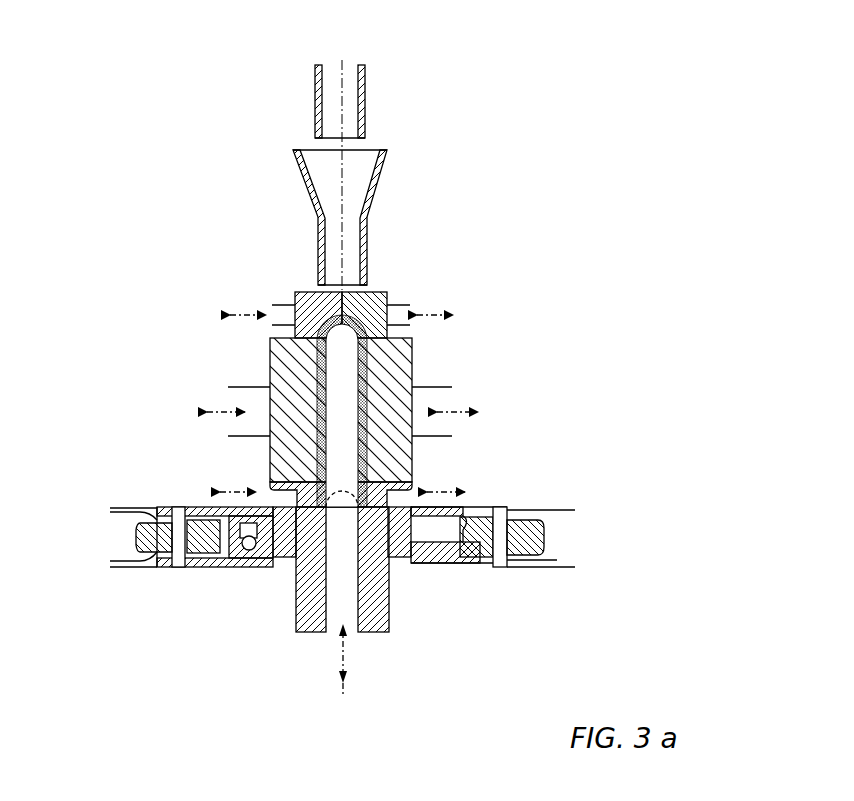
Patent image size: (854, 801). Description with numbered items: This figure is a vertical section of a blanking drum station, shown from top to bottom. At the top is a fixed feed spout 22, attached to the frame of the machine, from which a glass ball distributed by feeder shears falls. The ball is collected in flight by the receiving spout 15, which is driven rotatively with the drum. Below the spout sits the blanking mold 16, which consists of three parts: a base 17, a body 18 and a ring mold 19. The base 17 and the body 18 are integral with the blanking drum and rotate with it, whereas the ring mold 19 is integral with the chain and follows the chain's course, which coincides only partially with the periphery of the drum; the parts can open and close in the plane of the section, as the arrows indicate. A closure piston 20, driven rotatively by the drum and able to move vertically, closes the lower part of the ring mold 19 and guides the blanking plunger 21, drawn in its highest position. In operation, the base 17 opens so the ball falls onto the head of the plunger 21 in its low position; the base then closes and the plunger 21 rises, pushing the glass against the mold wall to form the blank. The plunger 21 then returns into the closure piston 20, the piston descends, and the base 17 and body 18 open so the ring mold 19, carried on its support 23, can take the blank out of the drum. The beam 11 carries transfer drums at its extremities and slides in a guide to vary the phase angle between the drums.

The beam 11 is at (490, 507).
The spout 15 is at (370, 205).
The blanking mold 16 is at (398, 352).
The base 17 is at (376, 302).
The body 18 is at (433, 398).
The ring mold 19 is at (300, 485).
The closure piston 20 is at (380, 603).
The blanking plunger 21 is at (352, 617).
The feed spout 22 is at (363, 86).
The support 23 is at (284, 543).